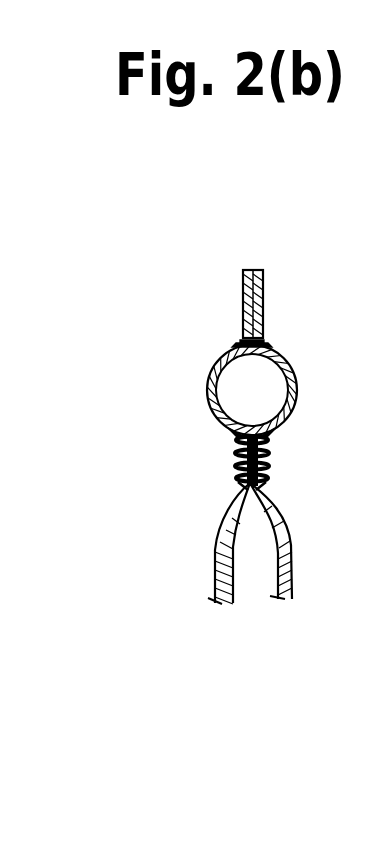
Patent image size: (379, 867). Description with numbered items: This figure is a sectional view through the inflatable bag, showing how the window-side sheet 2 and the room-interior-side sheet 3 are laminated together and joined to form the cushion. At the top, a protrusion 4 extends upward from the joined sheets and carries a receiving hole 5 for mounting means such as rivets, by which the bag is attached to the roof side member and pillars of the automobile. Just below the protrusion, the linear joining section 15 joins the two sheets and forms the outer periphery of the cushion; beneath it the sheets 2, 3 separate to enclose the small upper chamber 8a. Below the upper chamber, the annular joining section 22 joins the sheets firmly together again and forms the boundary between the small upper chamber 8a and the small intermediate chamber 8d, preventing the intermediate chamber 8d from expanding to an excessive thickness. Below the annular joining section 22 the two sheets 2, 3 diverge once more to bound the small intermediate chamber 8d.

The window-side sheet 2 is at (215, 558).
The room-interior-side sheet 3 is at (297, 548).
The protrusion 4 is at (238, 283).
The receiving hole 5 is at (263, 297).
The small upper chamber 8a is at (240, 393).
The small intermediate chamber 8d is at (257, 577).
The linear joining section 15 is at (247, 345).
The annular joining section 22 is at (230, 462).